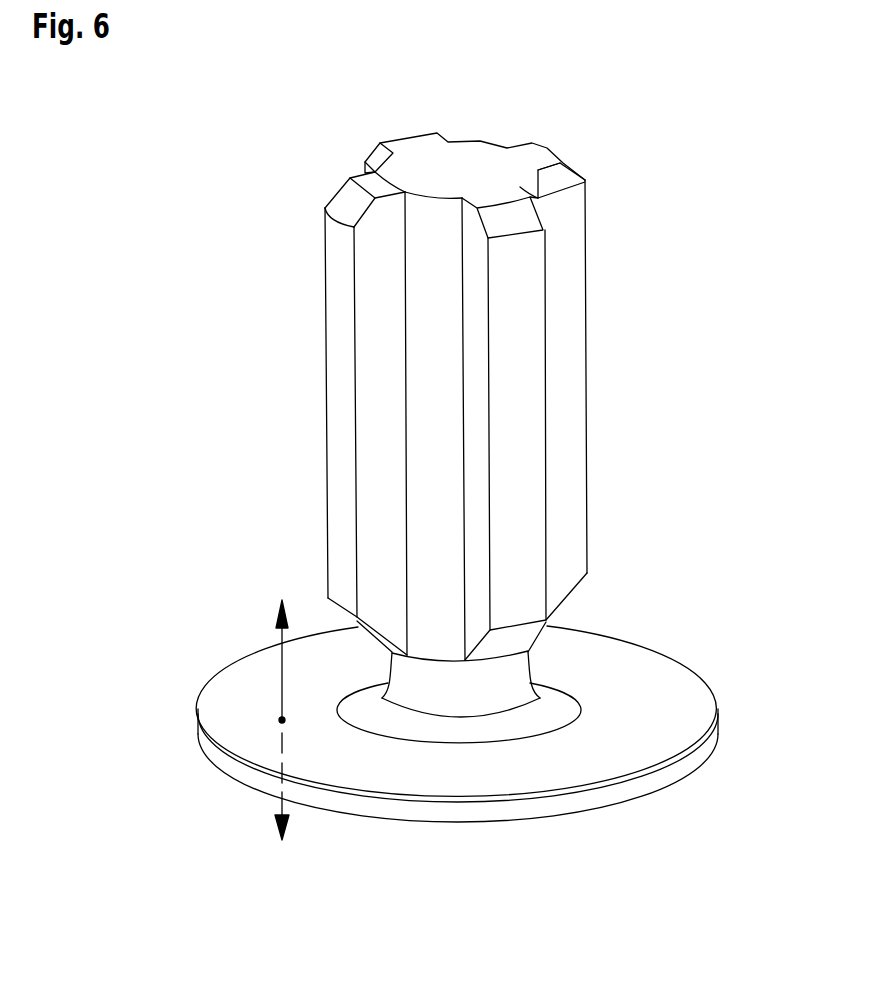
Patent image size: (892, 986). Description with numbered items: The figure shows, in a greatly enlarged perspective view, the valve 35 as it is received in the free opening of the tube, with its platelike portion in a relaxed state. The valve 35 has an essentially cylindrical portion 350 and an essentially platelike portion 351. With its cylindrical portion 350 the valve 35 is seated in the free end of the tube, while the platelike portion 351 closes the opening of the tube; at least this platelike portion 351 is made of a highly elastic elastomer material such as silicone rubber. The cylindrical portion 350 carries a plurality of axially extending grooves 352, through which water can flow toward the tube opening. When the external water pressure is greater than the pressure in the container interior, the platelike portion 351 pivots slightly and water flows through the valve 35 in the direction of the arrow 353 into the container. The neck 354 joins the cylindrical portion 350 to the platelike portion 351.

The valve 35 is at (699, 191).
The cylindrical portion 350 is at (587, 403).
The platelike portion 351 is at (693, 700).
The grooves 352 is at (482, 142).
The arrow 353 is at (282, 636).
The neck 354 is at (528, 666).